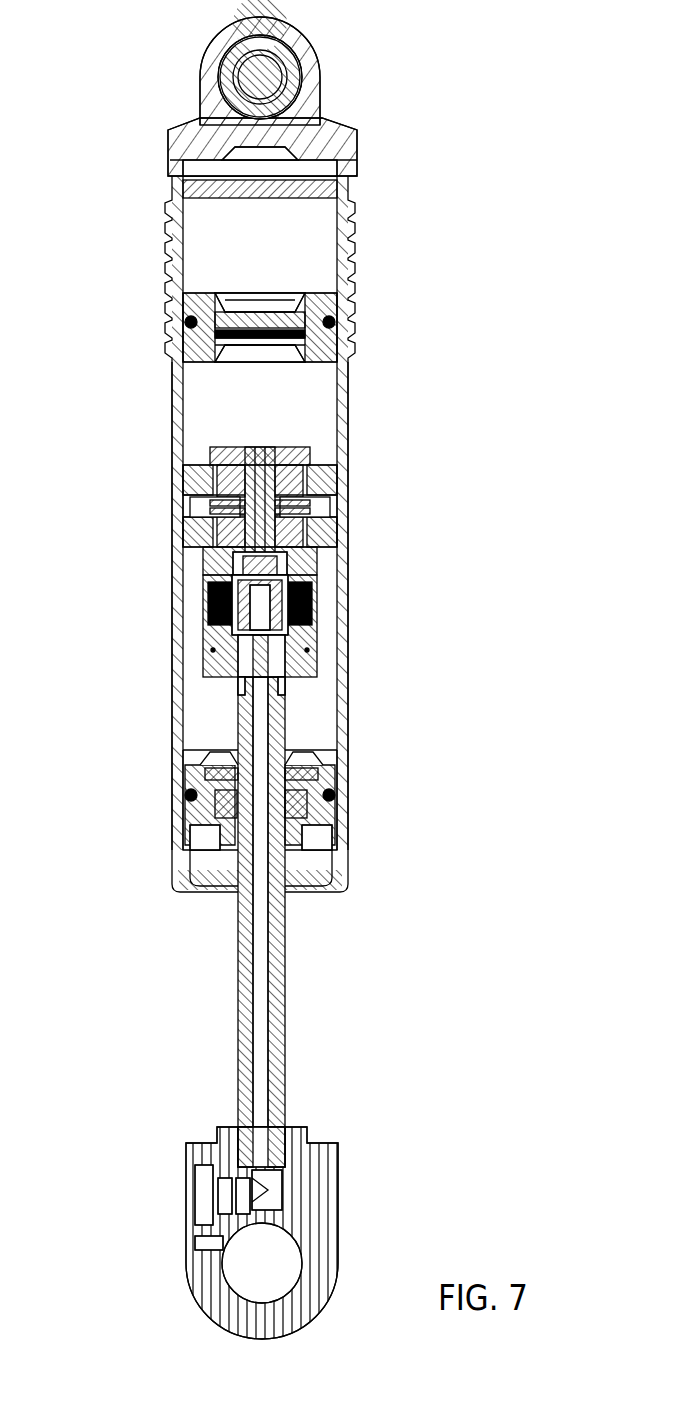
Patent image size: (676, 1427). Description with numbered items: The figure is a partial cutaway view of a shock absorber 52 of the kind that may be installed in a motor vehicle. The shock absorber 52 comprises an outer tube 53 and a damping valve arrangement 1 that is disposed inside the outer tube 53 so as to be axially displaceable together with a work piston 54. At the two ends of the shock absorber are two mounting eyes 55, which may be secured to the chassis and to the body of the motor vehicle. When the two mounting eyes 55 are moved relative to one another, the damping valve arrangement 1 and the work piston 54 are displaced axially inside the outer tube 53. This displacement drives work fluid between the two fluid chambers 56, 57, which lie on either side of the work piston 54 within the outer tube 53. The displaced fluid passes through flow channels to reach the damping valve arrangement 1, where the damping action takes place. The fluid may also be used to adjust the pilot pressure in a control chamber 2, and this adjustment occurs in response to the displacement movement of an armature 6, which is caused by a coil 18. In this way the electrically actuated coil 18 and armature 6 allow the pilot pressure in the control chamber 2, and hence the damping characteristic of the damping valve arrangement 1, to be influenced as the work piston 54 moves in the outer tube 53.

The damping valve arrangement 1 is at (145, 670).
The control chamber 2 is at (317, 506).
The armature 6 is at (310, 563).
The coil 18 is at (310, 597).
The shock absorber 52 is at (108, 577).
The outer tube 53 is at (345, 657).
The work piston 54 is at (155, 498).
The mounting eyes 55 is at (272, 75).
The fluid chamber 56 is at (315, 407).
The fluid chamber 57 is at (320, 718).